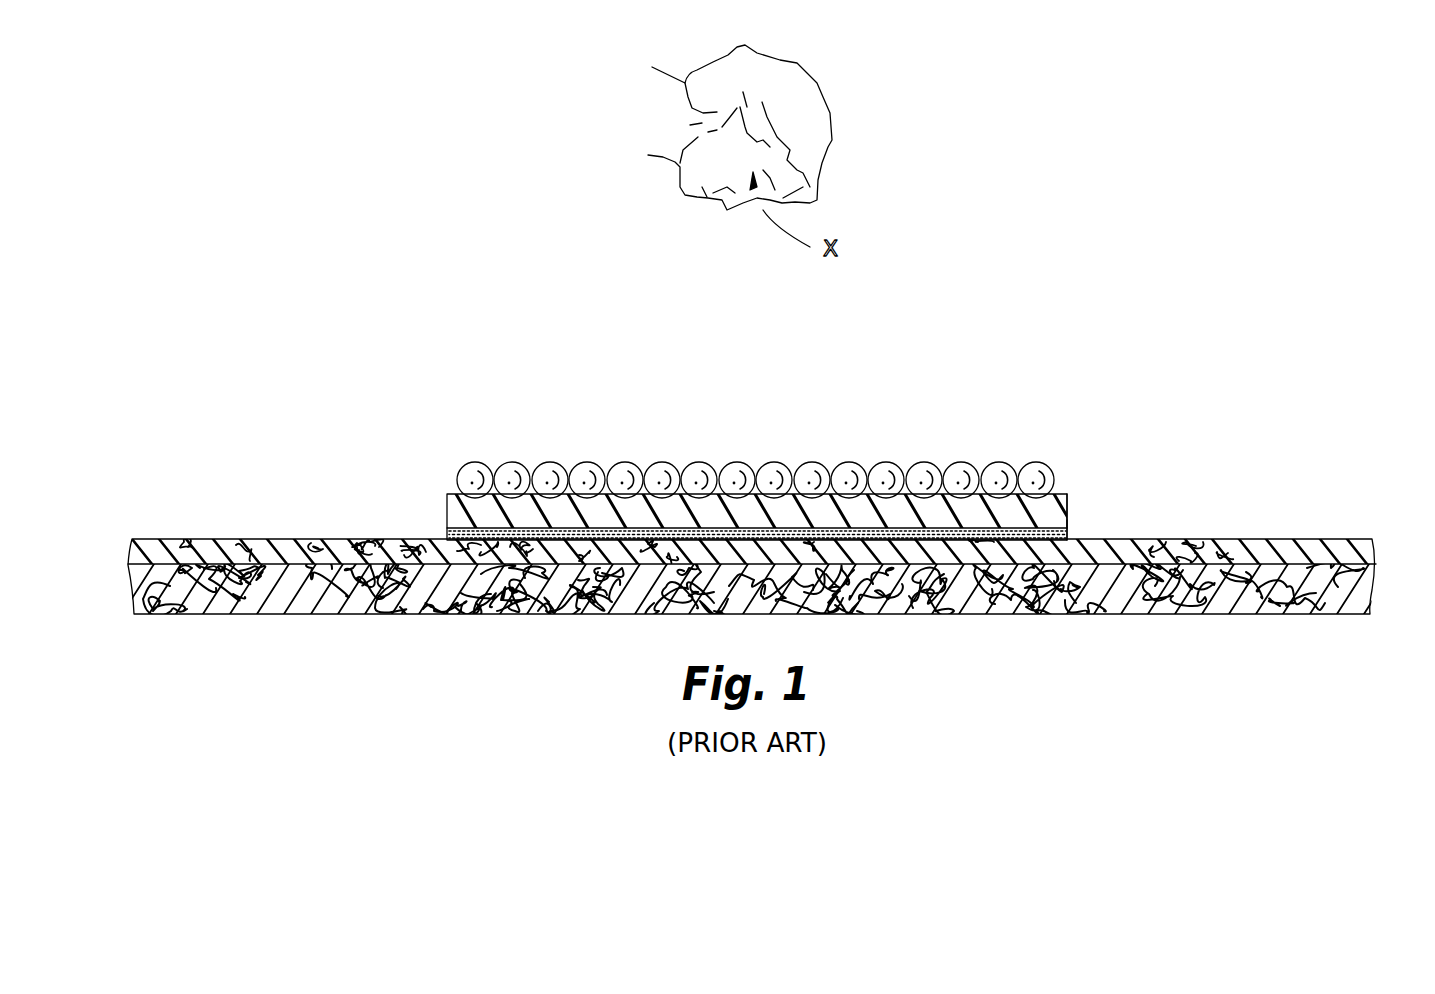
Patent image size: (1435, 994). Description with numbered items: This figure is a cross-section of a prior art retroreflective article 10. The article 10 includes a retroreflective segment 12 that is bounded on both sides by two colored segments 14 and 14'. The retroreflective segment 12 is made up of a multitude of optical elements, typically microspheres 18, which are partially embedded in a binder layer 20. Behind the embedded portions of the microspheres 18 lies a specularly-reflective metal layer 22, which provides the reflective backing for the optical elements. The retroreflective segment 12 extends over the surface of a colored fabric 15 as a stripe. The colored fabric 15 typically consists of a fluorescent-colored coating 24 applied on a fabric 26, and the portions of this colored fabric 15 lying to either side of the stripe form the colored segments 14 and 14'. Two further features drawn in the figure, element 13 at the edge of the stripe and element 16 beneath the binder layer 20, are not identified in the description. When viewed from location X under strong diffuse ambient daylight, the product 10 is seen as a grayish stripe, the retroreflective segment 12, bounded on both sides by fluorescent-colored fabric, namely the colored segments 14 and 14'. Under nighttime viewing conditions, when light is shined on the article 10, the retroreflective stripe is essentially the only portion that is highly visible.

The retroreflective article 10 is at (987, 352).
The retroreflective segment 12 is at (447, 413).
The edge of chip 13 is at (1068, 513).
The colored segment 14 is at (293, 449).
The colored segment 14' is at (1220, 450).
The colored fabric 15 is at (1330, 542).
The adhesive layer 16 is at (448, 534).
The microspheres 18 is at (587, 467).
The binder layer 20 is at (450, 507).
The specularly-reflective metal layer 22 is at (1067, 491).
The fluorescent-colored coating 24 is at (239, 538).
The fabric 26 is at (325, 615).